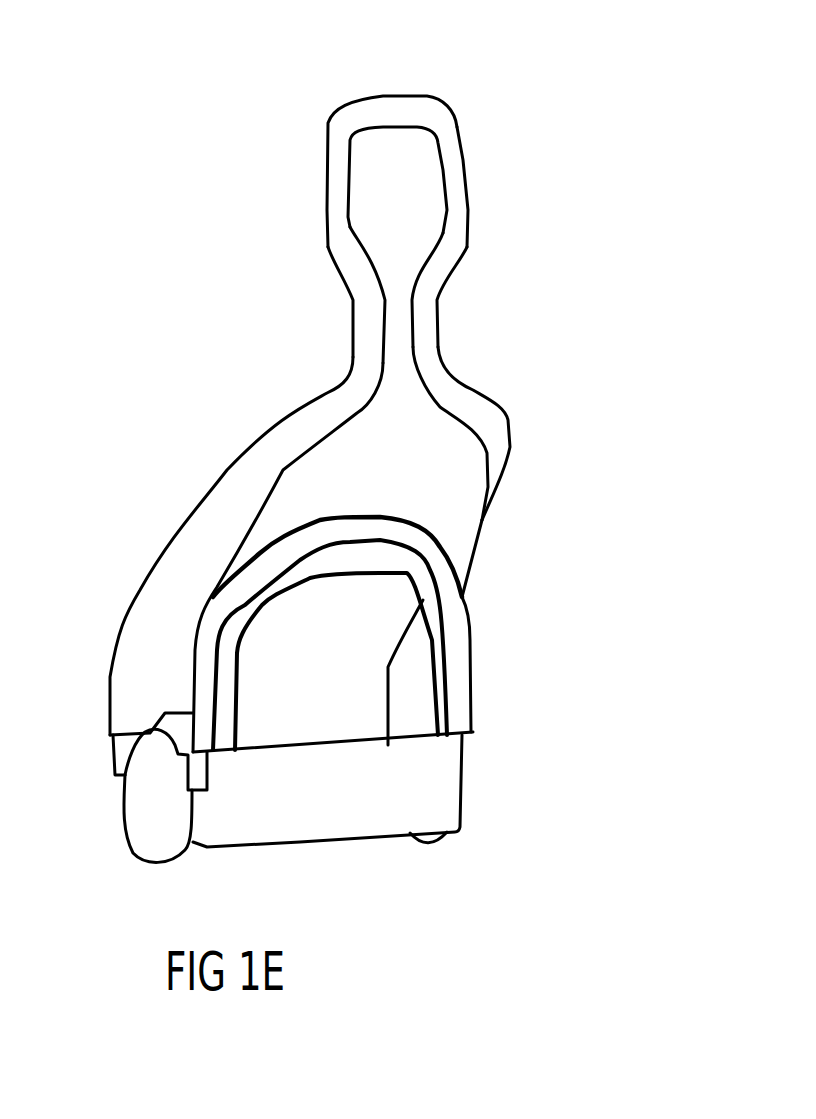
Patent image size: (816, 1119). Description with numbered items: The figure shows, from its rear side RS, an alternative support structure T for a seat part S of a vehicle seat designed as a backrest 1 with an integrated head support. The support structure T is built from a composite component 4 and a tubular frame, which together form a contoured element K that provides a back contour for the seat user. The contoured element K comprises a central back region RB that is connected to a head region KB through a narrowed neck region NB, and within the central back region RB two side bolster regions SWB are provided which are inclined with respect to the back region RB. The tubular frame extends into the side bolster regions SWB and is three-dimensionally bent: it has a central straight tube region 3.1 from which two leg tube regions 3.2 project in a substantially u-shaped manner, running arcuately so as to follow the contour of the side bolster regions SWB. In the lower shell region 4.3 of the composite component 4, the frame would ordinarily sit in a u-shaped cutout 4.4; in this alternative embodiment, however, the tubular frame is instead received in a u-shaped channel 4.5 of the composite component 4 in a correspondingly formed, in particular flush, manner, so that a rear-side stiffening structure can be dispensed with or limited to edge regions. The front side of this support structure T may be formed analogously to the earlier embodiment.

The backrest 1 is at (443, 90).
The seat part S is at (318, 103).
The head region KB is at (443, 183).
The neck region NB is at (416, 333).
The support structure T is at (577, 205).
The rear side RS is at (578, 405).
The back region RB is at (470, 500).
The side bolster region SWB is at (183, 550).
The contoured element K is at (215, 478).
The composite component 4 is at (348, 352).
The lower shell region 4.3 is at (322, 458).
The u-shaped cutout 4.4 is at (337, 713).
The u-shaped channel 4.5 is at (450, 567).
The central straight tube region 3.1 is at (387, 514).
The leg tube region 3.2 is at (210, 630).